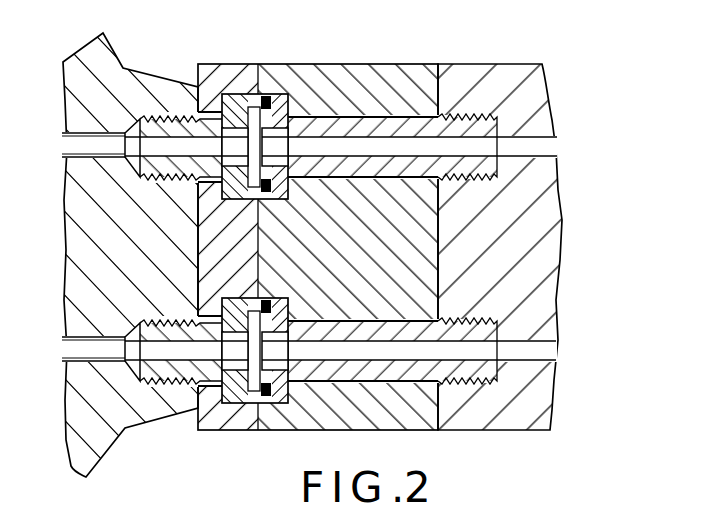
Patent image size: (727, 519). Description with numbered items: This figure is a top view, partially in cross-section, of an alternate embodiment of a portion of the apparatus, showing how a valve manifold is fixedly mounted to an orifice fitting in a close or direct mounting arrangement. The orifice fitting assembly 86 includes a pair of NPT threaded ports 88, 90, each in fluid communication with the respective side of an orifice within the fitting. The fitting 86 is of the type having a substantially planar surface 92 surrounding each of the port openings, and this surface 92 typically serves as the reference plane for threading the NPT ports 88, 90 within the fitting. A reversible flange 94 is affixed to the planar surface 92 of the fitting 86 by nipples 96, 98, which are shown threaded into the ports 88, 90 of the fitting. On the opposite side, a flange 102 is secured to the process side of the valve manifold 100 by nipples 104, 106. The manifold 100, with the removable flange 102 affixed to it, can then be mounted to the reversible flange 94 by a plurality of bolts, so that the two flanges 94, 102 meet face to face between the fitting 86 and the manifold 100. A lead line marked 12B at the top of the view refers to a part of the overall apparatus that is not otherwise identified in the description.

The conduit section 12B is at (467, 0).
The orifice fitting assembly 86 is at (133, 62).
The NPT threaded port 88 is at (175, 116).
The NPT threaded port 90 is at (166, 380).
The planar surface 92 is at (204, 217).
The reversible flange 94 is at (240, 82).
The nipple 96 is at (264, 98).
The nipple 98 is at (235, 396).
The valve manifold 100 is at (548, 218).
The flange 102 is at (420, 422).
The nipple 104 is at (375, 128).
The nipple 106 is at (352, 368).